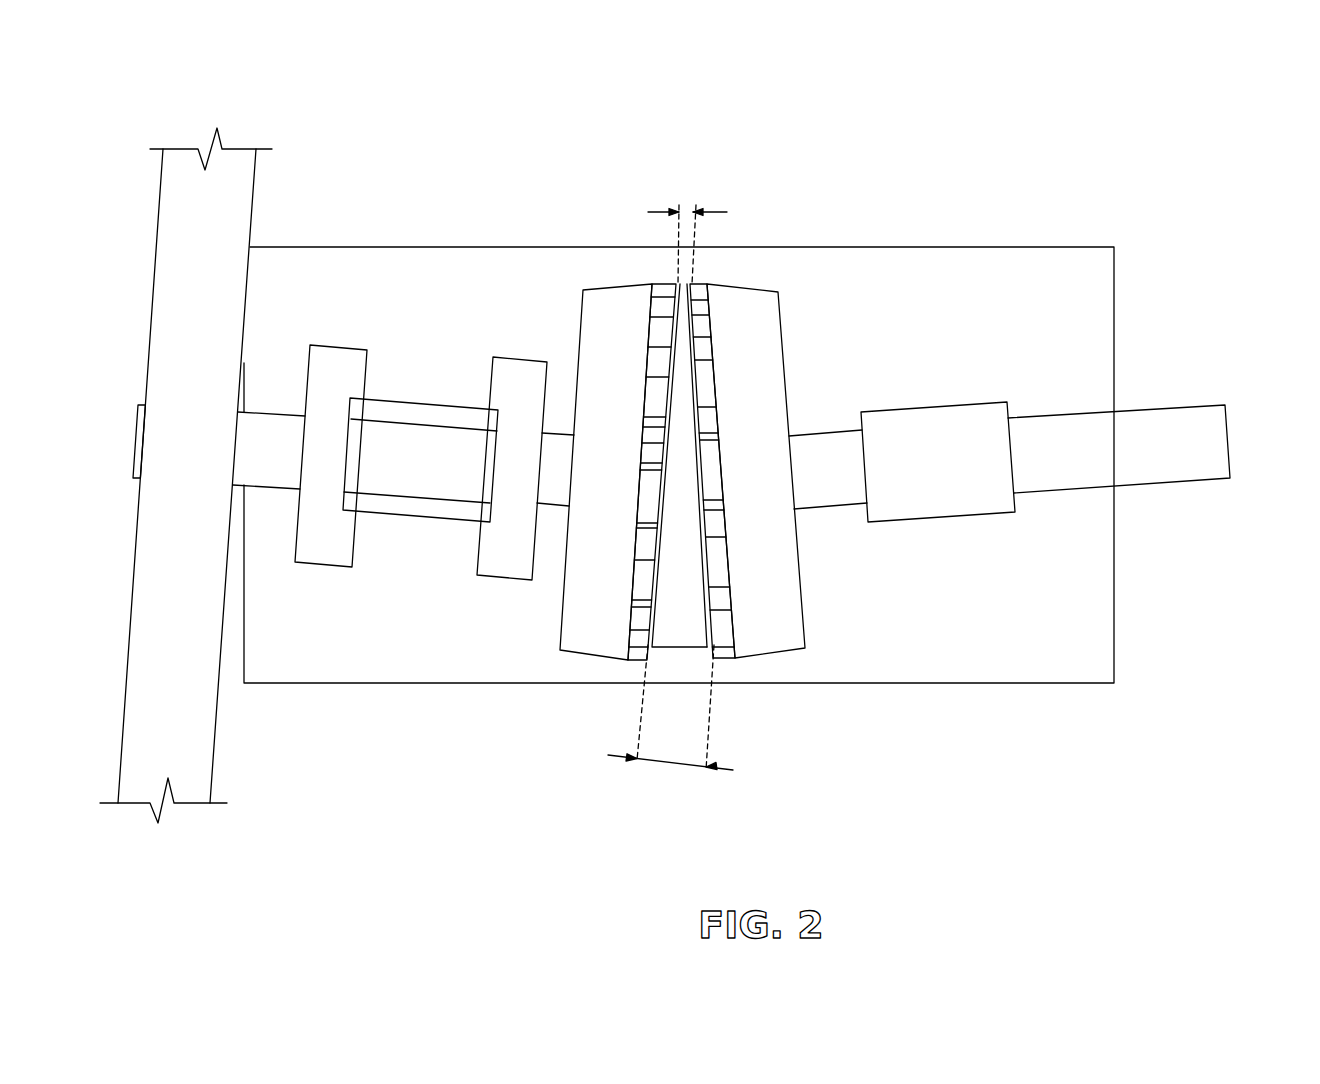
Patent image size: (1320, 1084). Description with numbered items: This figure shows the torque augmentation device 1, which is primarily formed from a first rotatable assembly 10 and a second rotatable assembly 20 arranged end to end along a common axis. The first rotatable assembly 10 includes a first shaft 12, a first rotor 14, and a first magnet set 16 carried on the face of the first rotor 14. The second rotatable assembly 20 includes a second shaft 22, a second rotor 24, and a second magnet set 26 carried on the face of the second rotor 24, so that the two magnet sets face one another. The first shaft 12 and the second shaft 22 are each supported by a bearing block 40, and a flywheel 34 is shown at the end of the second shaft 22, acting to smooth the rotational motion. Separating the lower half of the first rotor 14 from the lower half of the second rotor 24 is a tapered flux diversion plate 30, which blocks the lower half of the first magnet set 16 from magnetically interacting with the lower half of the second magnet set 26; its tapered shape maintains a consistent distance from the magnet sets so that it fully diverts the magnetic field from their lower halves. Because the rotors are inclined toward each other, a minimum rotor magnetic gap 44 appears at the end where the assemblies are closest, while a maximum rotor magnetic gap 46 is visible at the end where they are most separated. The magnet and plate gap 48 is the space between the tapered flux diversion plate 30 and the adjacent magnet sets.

The torque augmentation device 1 is at (1237, 102).
The first rotatable assembly 10 is at (762, 509).
The first shaft 12 is at (1115, 461).
The first rotor 14 is at (739, 486).
The first magnet set 16 is at (703, 380).
The second rotatable assembly 20 is at (596, 509).
The second shaft 22 is at (401, 476).
The second rotor 24 is at (589, 489).
The second magnet set 26 is at (655, 405).
The tapered flux diversion plate 30 is at (730, 465).
The flywheel 34 is at (171, 479).
The bearing block 40 is at (486, 571).
The minimum rotor magnetic gap 44 is at (688, 212).
The maximum rotor magnetic gap 46 is at (670, 766).
The magnet and plate gap 48 is at (693, 363).